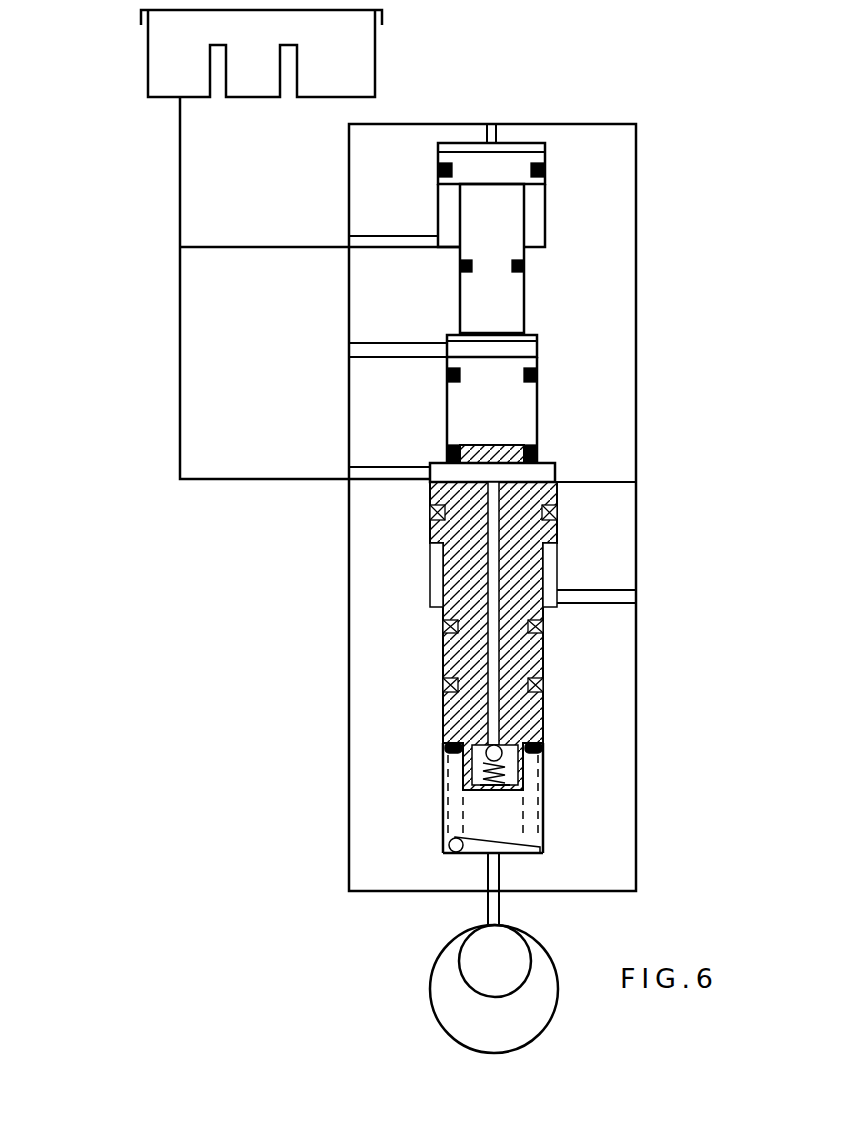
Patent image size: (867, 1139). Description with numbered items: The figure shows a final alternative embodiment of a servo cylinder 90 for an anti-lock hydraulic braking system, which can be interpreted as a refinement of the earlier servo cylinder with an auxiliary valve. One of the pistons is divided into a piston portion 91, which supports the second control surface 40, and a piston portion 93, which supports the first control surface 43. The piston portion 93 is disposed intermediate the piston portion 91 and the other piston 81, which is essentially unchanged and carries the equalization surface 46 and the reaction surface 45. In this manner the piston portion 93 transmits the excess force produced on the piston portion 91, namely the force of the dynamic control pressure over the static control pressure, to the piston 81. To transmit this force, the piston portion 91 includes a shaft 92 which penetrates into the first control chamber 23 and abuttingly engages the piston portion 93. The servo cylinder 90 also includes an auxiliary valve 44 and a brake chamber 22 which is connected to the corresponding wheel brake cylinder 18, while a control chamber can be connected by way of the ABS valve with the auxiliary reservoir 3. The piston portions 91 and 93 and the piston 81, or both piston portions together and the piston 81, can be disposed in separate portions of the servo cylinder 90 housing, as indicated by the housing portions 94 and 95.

The auxiliary reservoir 3 is at (397, 71).
The wheel brake cylinder 18 is at (493, 955).
The brake chamber 22 is at (508, 828).
The first control chamber 23 is at (447, 336).
The second control surface 40 is at (503, 152).
The first control surface 43 is at (523, 355).
The auxiliary valve 44 is at (470, 780).
The reaction surface 45 is at (545, 783).
The equalization surface 46 is at (557, 604).
The piston 81 is at (533, 548).
The servo cylinder 90 is at (645, 182).
The piston portion 91 is at (535, 232).
The shaft 92 is at (503, 302).
The piston portion 93 is at (517, 410).
The housing portion 94 is at (602, 438).
The housing portion 95 is at (605, 553).